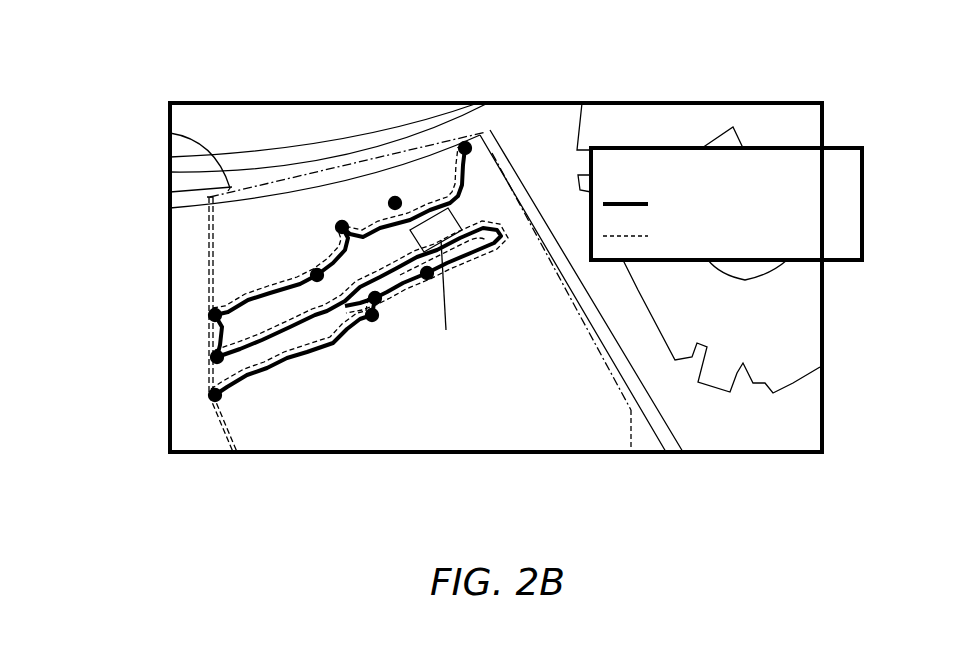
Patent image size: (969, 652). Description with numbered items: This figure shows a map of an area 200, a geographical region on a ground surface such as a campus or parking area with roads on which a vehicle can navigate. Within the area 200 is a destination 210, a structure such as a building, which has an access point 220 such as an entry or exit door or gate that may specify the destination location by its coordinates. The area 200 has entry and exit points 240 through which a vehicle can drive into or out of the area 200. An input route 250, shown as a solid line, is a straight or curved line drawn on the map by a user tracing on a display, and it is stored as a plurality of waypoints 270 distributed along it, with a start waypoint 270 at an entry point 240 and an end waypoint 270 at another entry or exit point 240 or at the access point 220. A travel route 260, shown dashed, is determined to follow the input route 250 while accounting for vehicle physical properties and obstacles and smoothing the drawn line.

The area 200 is at (170, 134).
The destination 210 is at (457, 262).
The access point 220 is at (455, 217).
The entry and exit point 240 is at (465, 148).
The input route 250 is at (252, 290).
The travel route 260 is at (362, 205).
The waypoint 270 is at (315, 270).